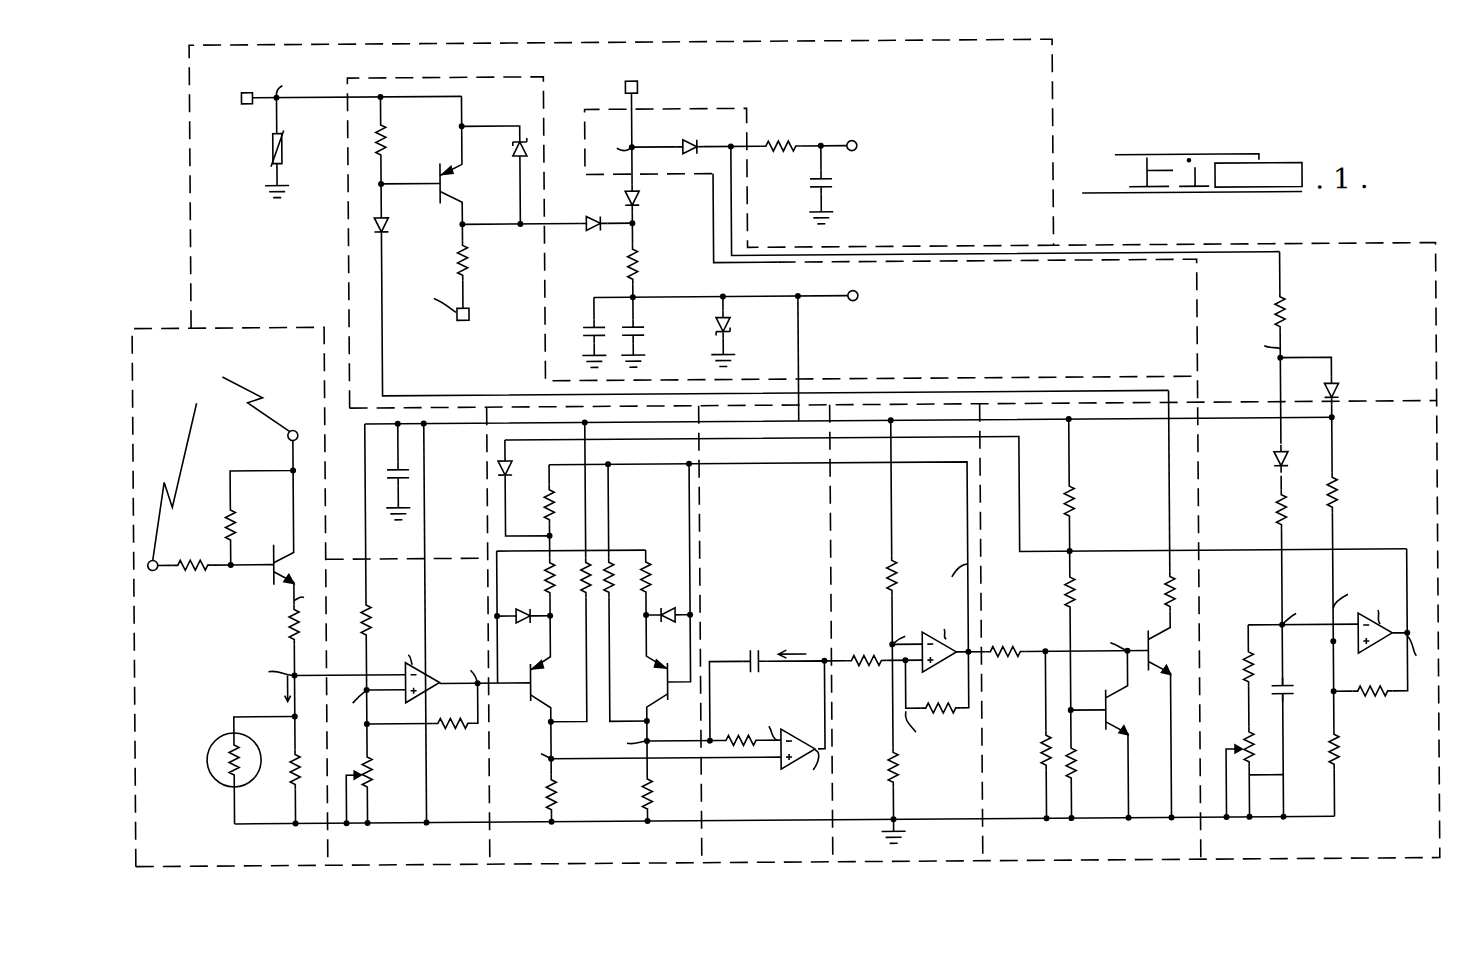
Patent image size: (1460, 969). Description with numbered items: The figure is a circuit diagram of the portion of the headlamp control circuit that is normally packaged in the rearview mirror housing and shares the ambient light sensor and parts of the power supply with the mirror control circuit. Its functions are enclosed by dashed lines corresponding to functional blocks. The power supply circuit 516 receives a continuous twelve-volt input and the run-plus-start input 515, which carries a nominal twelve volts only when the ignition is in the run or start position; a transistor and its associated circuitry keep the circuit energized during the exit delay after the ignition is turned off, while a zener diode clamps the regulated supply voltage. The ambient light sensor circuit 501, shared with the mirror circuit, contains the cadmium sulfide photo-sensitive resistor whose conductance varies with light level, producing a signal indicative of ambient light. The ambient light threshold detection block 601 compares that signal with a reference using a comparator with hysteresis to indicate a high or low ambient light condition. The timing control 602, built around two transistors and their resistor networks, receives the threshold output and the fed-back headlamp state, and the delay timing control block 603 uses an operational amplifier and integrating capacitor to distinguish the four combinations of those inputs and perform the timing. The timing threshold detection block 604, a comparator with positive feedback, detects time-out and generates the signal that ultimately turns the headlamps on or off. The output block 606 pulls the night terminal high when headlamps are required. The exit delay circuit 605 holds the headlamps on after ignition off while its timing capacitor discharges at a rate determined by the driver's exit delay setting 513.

The power supply circuit 516 is at (1058, 92).
The 12 V RUN+START input 515 is at (645, 91).
The ambient light sensor circuit 501 is at (238, 866).
The ambient light threshold detection block 601 is at (432, 866).
The timing control 602 is at (620, 866).
The delay timing control block 603 is at (800, 866).
The timing threshold detection block 604 is at (920, 866).
The output block 606 is at (1112, 866).
The exit delay circuit 605 is at (1325, 866).
The driver's exit delay setting 513 is at (1282, 778).